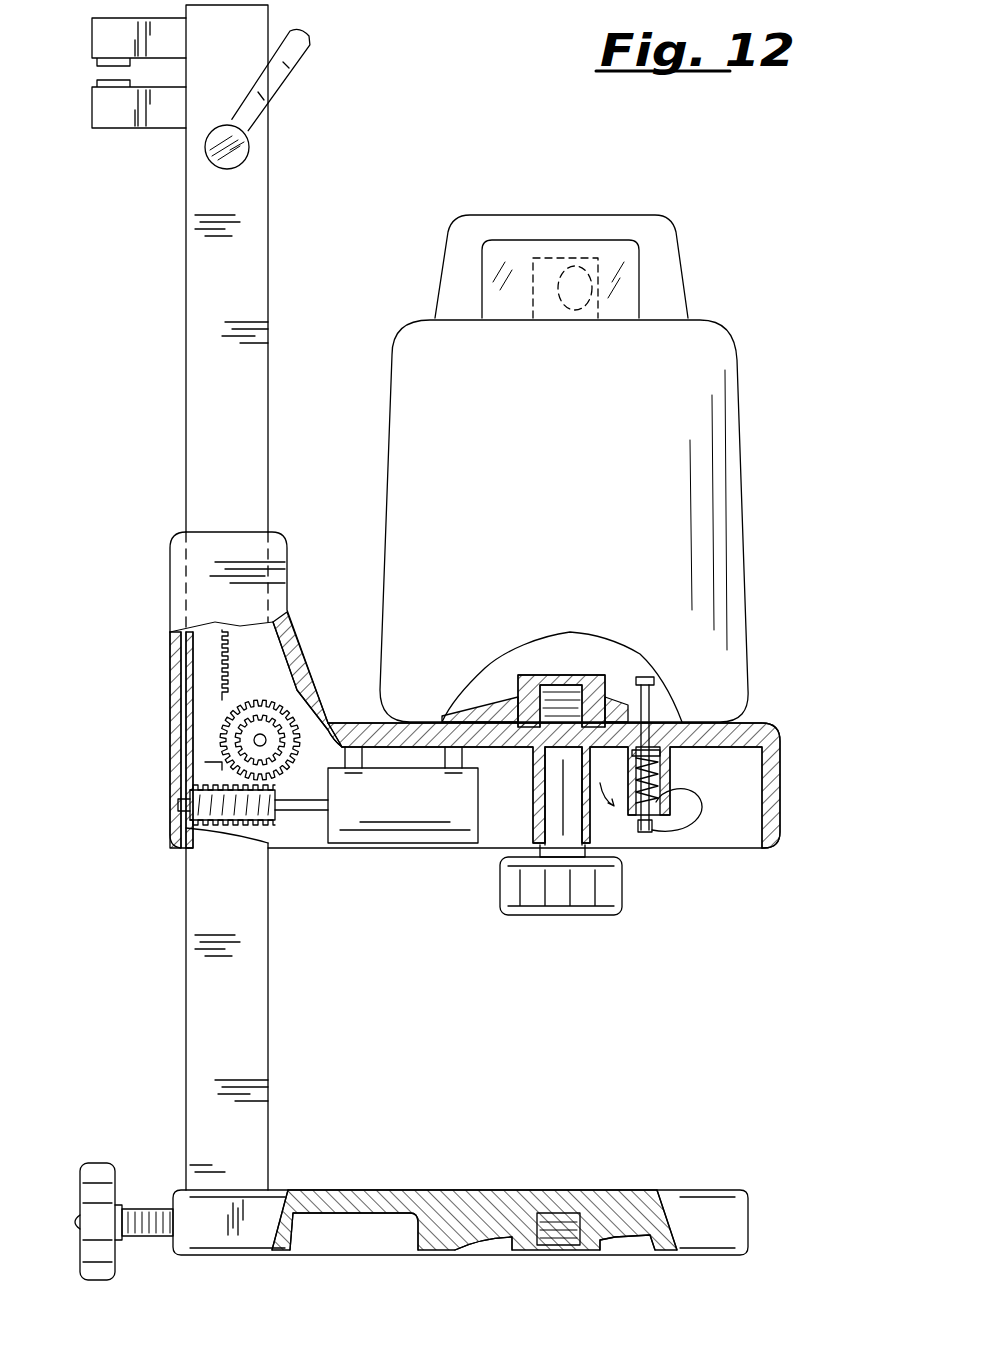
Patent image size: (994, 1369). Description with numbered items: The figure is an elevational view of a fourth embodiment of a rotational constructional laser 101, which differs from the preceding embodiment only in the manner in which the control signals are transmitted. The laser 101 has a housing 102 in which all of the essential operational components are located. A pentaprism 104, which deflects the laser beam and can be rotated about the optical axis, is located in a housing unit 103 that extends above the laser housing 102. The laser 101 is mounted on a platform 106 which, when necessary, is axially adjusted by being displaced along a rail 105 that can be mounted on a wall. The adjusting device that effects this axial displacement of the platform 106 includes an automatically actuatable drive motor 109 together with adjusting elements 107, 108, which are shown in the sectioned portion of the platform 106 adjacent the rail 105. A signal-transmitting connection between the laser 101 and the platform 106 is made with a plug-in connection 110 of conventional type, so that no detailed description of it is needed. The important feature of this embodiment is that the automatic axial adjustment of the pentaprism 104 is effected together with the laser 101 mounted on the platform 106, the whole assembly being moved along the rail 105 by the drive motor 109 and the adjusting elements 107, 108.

The rotational constructional laser 101 is at (611, 531).
The housing 102 is at (710, 514).
The housing unit 103 is at (668, 215).
The pentaprism 104 is at (567, 258).
The rail 105 is at (210, 458).
The platform 106 is at (778, 850).
The adjusting element 107 is at (205, 680).
The adjusting element 108 is at (228, 771).
The drive motor 109 is at (400, 812).
The plug-in connection 110 is at (655, 722).